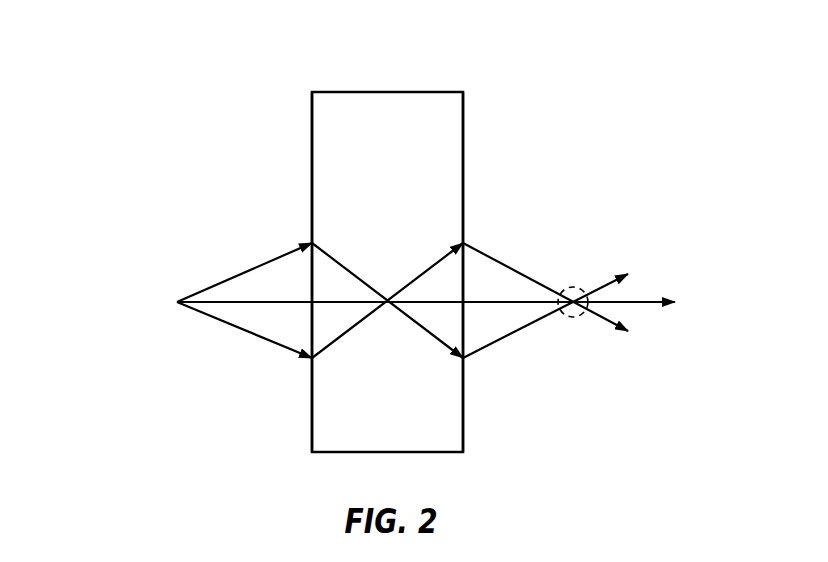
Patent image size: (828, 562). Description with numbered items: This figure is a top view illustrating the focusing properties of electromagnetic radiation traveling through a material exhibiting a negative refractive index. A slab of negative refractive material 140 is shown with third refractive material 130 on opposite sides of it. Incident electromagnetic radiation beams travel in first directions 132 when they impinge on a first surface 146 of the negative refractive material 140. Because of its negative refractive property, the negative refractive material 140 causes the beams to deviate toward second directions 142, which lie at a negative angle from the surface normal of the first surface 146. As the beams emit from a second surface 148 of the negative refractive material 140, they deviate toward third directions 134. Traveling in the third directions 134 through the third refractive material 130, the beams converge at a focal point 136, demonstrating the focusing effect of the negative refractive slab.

The third refractive material 130 is at (234, 165).
The negative refractive material 140 is at (371, 205).
The first directions 132 is at (233, 277).
The second directions 142 is at (422, 273).
The third directions 134 is at (492, 257).
The focal point 136 is at (566, 286).
The first surface 146 is at (312, 415).
The second surface 148 is at (463, 415).